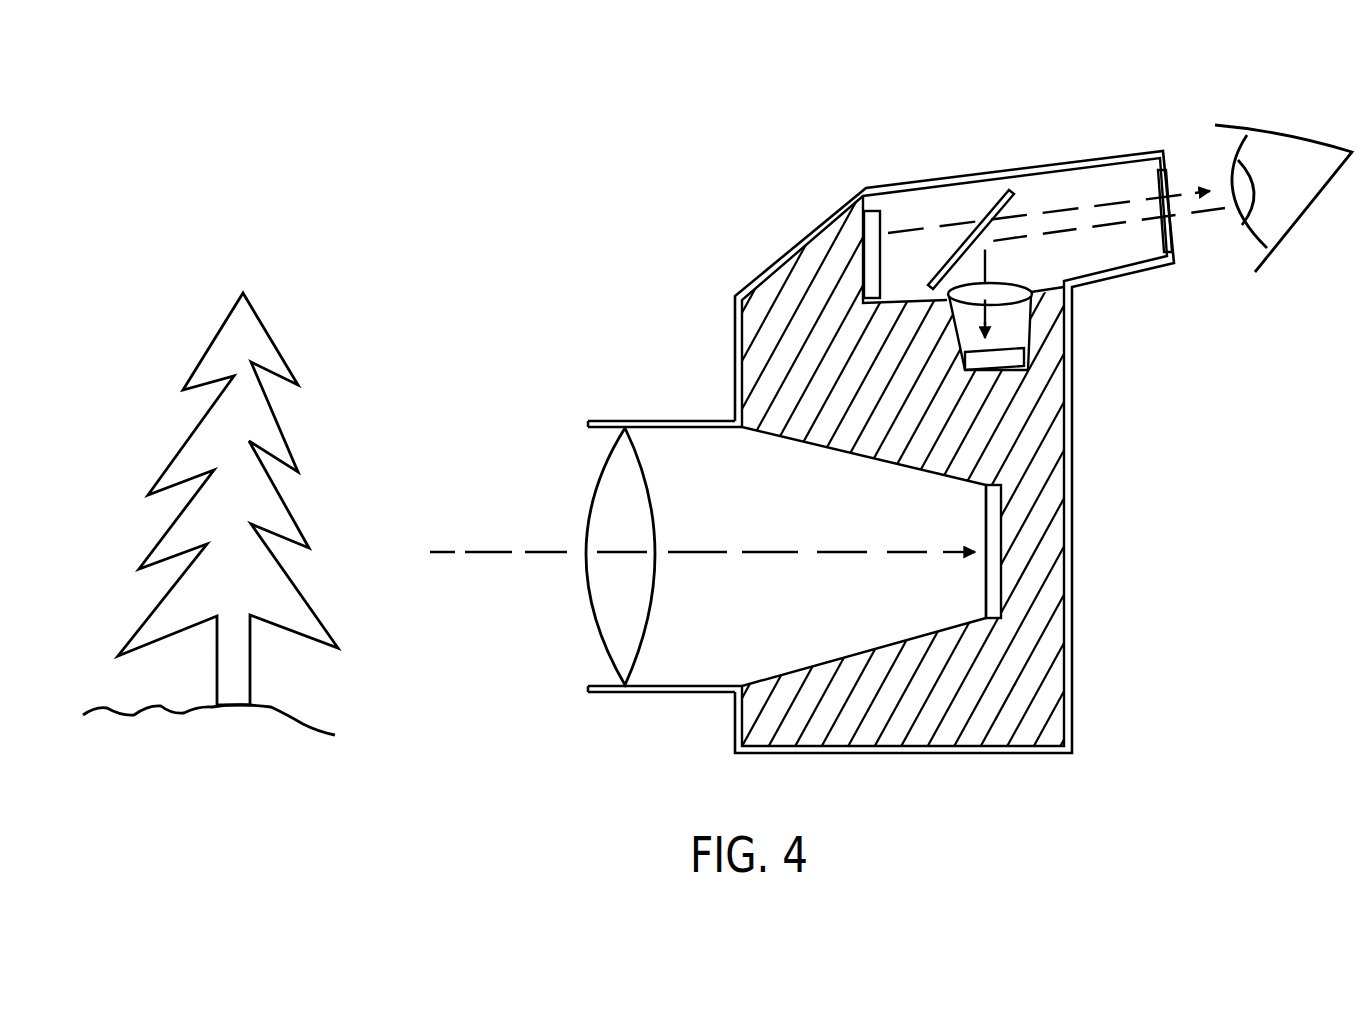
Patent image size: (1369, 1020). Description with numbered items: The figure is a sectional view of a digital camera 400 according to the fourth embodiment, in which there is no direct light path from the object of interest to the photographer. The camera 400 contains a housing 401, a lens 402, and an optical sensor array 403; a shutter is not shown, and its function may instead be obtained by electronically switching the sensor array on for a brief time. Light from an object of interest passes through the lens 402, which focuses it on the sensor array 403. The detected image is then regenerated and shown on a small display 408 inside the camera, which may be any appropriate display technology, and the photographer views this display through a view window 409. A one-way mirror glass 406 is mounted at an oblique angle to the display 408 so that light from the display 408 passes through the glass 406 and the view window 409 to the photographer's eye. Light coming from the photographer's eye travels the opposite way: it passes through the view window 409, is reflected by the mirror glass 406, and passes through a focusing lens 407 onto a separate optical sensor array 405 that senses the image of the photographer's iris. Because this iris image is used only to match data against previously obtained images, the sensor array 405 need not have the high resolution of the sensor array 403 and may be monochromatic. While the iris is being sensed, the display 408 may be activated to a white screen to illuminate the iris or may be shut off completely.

The camera 400 is at (881, 412).
The housing 401 is at (1072, 702).
The lens 402 is at (600, 641).
The optical sensor array 403 is at (1002, 573).
The optical sensor array 405 is at (1017, 360).
The one-way mirror glass 406 is at (993, 200).
The focusing lens 407 is at (1012, 293).
The display 408 is at (872, 210).
The view window 409 is at (1175, 235).